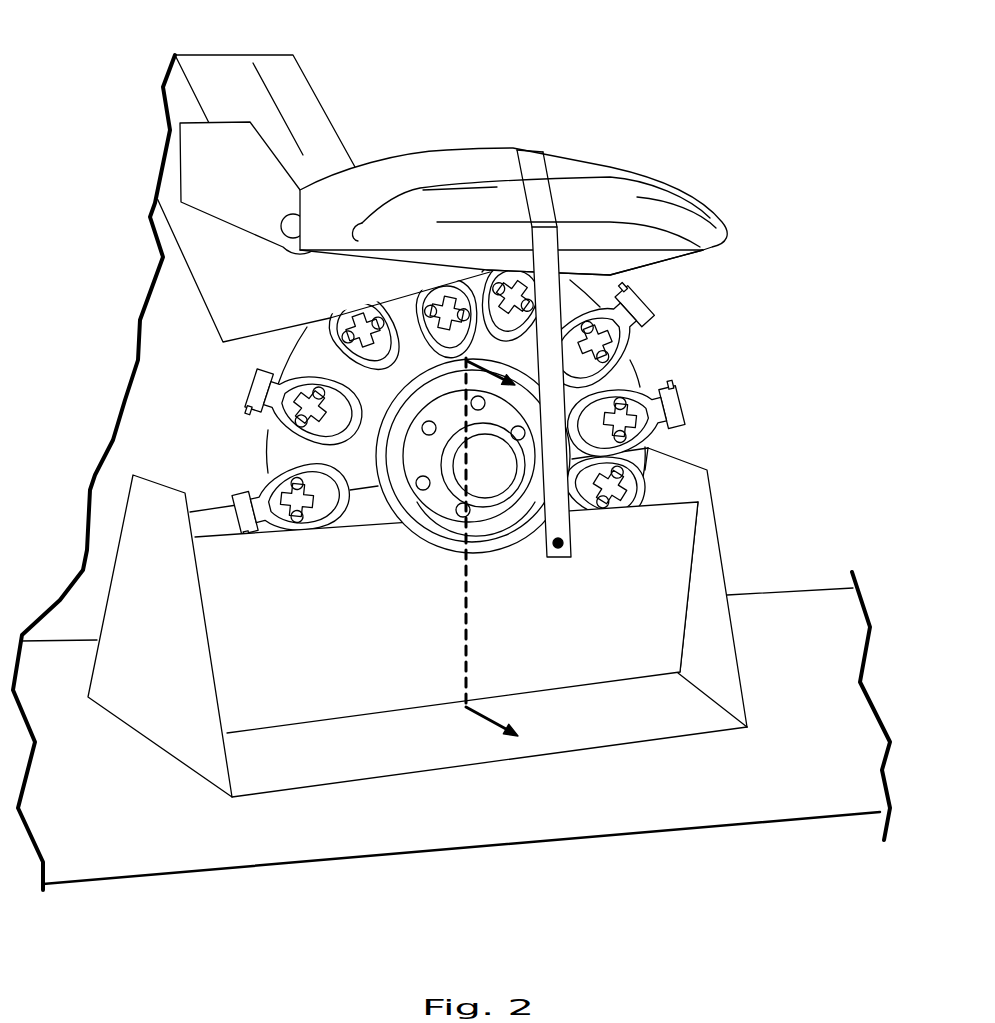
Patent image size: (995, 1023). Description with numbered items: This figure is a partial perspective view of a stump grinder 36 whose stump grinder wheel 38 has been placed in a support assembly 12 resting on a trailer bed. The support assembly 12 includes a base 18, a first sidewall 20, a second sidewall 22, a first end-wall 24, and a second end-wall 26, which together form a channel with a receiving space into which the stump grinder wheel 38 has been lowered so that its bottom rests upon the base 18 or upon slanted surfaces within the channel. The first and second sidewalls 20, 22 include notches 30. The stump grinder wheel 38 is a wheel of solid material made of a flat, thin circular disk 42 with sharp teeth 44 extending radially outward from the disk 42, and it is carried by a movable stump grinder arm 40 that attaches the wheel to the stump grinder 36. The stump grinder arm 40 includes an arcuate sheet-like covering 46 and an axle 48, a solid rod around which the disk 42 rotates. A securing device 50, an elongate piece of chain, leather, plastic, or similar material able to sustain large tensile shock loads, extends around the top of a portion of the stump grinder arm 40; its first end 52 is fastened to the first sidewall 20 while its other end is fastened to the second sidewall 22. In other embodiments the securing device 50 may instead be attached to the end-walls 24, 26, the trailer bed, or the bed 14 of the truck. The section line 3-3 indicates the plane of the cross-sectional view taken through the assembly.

The support assembly 12 is at (462, 526).
The bed of truck 14 is at (451, 472).
The base 18 is at (489, 735).
The first sidewall 20 is at (446, 617).
The second sidewall 22 is at (212, 512).
The first end-wall 24 is at (160, 636).
The second end-wall 26 is at (740, 663).
The notches 30 is at (390, 477).
The stump grinder 36 is at (513, 186).
The stump grinder wheel 38 is at (658, 299).
The stump grinder arm 40 is at (315, 93).
The disk 42 is at (636, 362).
The teeth 44 is at (682, 403).
The covering 46 is at (399, 156).
The axle 48 is at (452, 458).
The securing device 50 is at (577, 318).
The first end 52 is at (571, 522).
The section line 3-3 is at (465, 625).